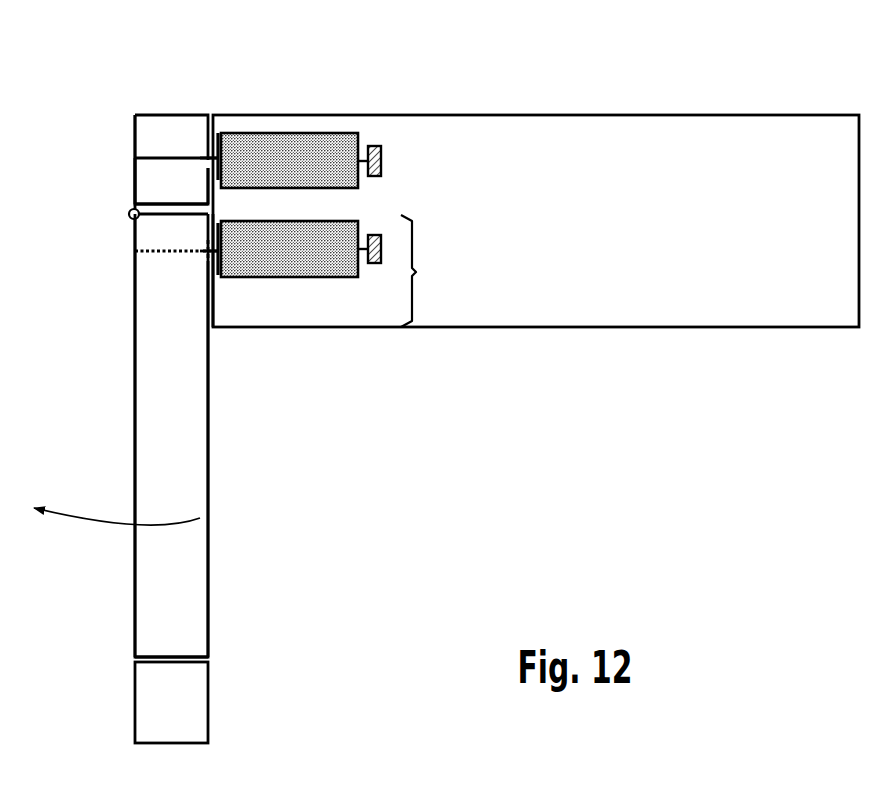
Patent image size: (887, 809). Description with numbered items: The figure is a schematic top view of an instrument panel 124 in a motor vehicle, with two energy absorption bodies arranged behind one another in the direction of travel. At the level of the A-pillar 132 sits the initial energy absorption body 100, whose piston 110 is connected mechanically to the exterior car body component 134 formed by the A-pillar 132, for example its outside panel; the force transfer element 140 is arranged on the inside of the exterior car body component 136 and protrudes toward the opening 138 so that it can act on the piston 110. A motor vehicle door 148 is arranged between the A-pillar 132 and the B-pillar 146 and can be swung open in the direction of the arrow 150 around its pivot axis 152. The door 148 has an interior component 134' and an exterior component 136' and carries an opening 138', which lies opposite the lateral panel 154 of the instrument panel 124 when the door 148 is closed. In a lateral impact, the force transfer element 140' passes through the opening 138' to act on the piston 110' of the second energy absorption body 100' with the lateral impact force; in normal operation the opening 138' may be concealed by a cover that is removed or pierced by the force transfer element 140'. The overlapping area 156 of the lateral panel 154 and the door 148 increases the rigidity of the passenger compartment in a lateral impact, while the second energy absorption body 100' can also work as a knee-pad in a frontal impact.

The energy absorption body 100 is at (301, 117).
The second energy absorption body 100' is at (313, 301).
The piston 110 is at (211, 114).
The piston 110' is at (229, 306).
The instrument panel 124 is at (630, 328).
The A-pillar 132 is at (137, 108).
The interior car body component 134 is at (137, 184).
The interior car body component 134' is at (261, 459).
The exterior car body component 136 is at (89, 159).
The exterior car body component 136' is at (81, 435).
The opening 138 is at (180, 103).
The opening 138' is at (144, 320).
The force transfer element 140 is at (136, 123).
The force transfer element 140' is at (145, 293).
The B-pillar 146 is at (208, 700).
The motor vehicle door 148 is at (208, 618).
The arrow 150 is at (105, 525).
The pivot axis 152 is at (130, 219).
The lateral panel 154 is at (213, 288).
The overlapping area 156 is at (430, 271).